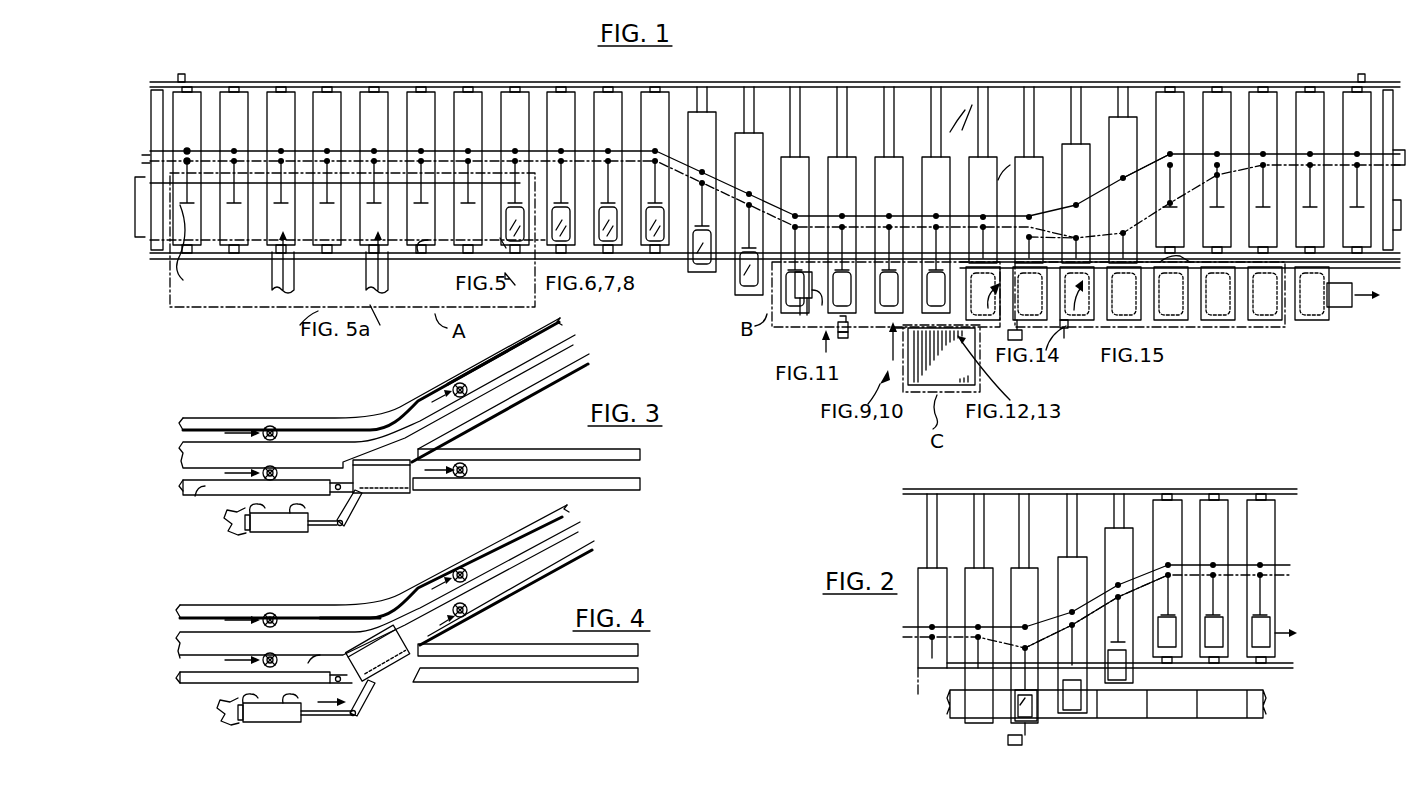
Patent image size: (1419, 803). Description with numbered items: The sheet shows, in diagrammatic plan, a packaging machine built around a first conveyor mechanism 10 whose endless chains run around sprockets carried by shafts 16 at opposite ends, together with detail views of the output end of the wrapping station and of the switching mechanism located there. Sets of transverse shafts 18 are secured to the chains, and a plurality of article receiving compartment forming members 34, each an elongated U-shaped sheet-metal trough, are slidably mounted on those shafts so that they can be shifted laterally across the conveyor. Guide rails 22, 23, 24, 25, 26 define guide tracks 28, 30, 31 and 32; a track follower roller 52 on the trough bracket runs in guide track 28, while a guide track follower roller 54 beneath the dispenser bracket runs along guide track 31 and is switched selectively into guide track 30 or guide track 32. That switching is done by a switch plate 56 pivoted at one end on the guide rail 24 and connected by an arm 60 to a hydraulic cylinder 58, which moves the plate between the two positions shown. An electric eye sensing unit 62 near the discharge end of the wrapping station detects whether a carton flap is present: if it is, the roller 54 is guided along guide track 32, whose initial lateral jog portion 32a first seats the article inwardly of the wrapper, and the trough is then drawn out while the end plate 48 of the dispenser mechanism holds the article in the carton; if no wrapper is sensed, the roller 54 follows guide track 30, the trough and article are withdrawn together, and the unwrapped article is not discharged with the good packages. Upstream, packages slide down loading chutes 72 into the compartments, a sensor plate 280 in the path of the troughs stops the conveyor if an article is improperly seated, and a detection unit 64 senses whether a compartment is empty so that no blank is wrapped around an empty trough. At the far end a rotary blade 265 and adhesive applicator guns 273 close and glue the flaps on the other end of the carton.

In FIG. 1, the first conveyor mechanism 10 is at (536, 83).
In FIG. 1, the shafts 16 is at (184, 79).
In FIG. 1, the transverse shafts 18 is at (972, 105).
In FIG. 3, the guide rail 22 is at (188, 411).
In FIG. 4, the guide rail 22 is at (180, 618).
In FIG. 3, the guide rail 23 is at (605, 340).
In FIG. 4, the guide rail 23 is at (609, 527).
In FIG. 3, the guide rail 24 is at (660, 485).
In FIG. 4, the guide rail 24 is at (658, 680).
In FIG. 3, the guide rail 25 is at (589, 363).
In FIG. 4, the guide rail 25 is at (597, 550).
In FIG. 3, the guide rail 26 is at (642, 462).
In FIG. 4, the guide rail 26 is at (640, 659).
In FIG. 1, the guide track 28 is at (1088, 166).
In FIG. 3, the guide track 28 is at (470, 386).
In FIG. 4, the guide track 28 is at (300, 622).
In FIG. 2, the guide track 28 is at (900, 628).
In FIG. 1, the guide track 30 is at (1170, 200).
In FIG. 3, the guide track 30 is at (512, 394).
In FIG. 2, the guide track 30 is at (1127, 576).
In FIG. 1, the guide track 31 is at (775, 199).
In FIG. 3, the guide track 31 is at (205, 490).
In FIG. 4, the guide track 31 is at (318, 660).
In FIG. 2, the guide track 31 is at (902, 638).
In FIG. 1, the guide track 32 is at (1122, 210).
In FIG. 3, the guide track 32 is at (501, 492).
In FIG. 4, the guide track 32 is at (493, 683).
In FIG. 1, the initial lateral jog portion 32a is at (1010, 165).
In FIG. 1, the article receiving compartment forming member 34 is at (364, 108).
In FIG. 2, the article receiving compartment forming member 34 is at (910, 557).
In FIG. 1, the plate 48 is at (184, 250).
In FIG. 2, the plate 48 is at (1275, 610).
In FIG. 1, the track follower roller 52 is at (187, 151).
In FIG. 3, the track follower roller 52 is at (270, 426).
In FIG. 4, the track follower roller 52 is at (262, 618).
In FIG. 2, the track follower roller 52 is at (1260, 565).
In FIG. 1, the guide track follower roller 54 is at (187, 161).
In FIG. 3, the guide track follower roller 54 is at (268, 466).
In FIG. 4, the guide track follower roller 54 is at (268, 668).
In FIG. 2, the guide track follower roller 54 is at (1265, 573).
In FIG. 3, the switch plate 56 is at (394, 497).
In FIG. 4, the switch plate 56 is at (392, 680).
In FIG. 3, the hydraulic cylinder 58 is at (275, 530).
In FIG. 4, the hydraulic cylinder 58 is at (275, 726).
In FIG. 3, the arm 60 is at (362, 500).
In FIG. 1, the electric eye sensing unit 62 is at (1030, 335).
In FIG. 2, the electric eye sensing unit 62 is at (1025, 739).
In FIG. 1, the detection unit 64 is at (846, 334).
In FIG. 1, the loading chutes 72 is at (269, 287).
In FIG. 1, the rotary blade 265 is at (1166, 310).
In FIG. 1, the adhesive applicator guns 273 is at (1232, 306).
In FIG. 1, the sensor plate 280 is at (800, 313).